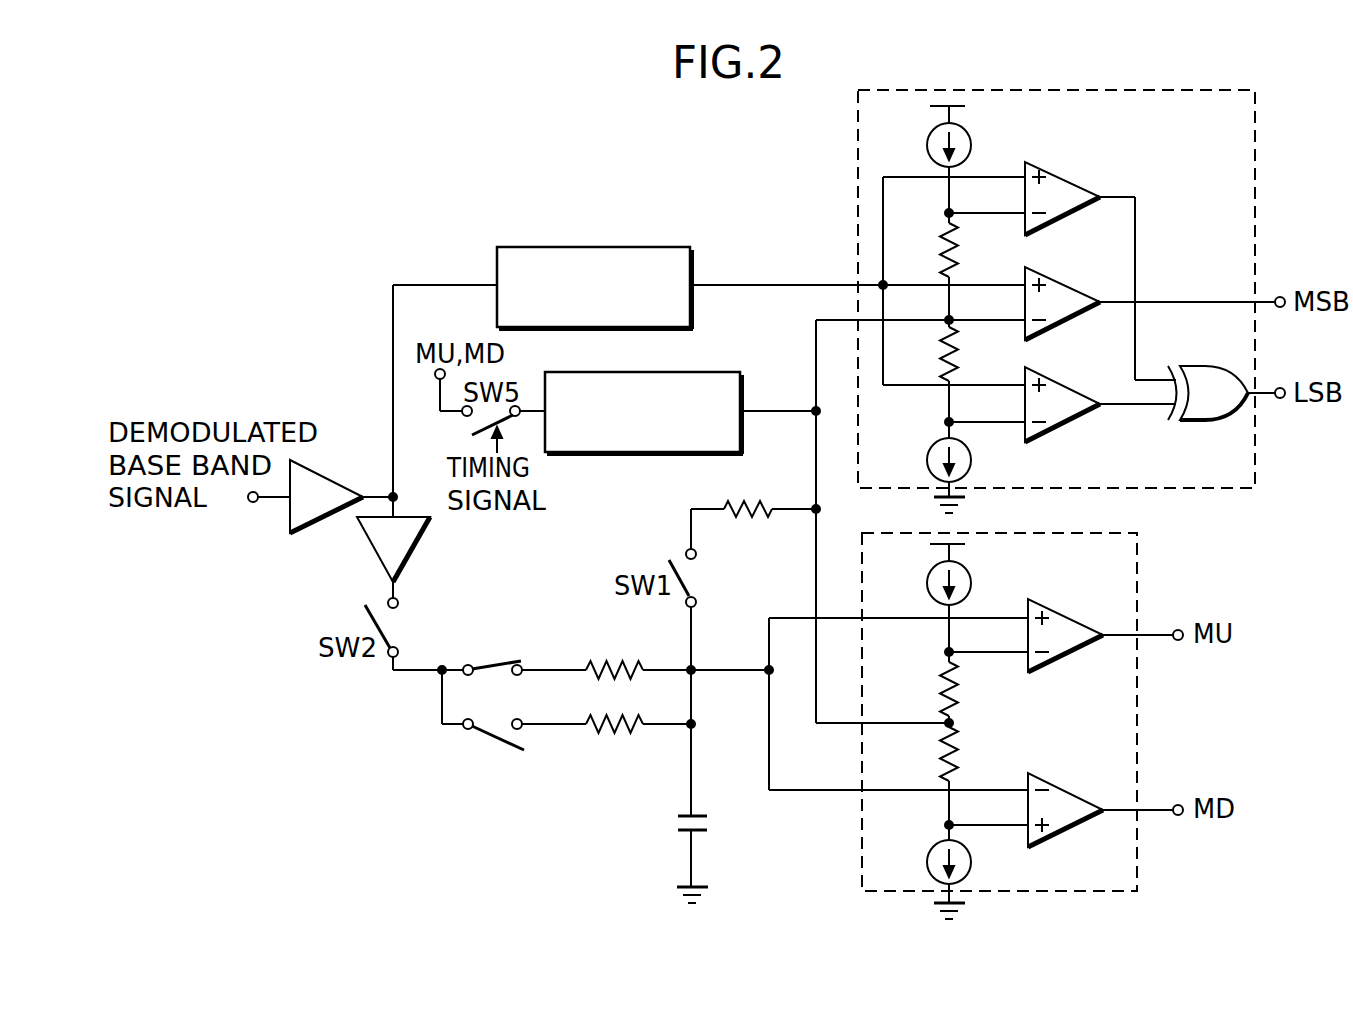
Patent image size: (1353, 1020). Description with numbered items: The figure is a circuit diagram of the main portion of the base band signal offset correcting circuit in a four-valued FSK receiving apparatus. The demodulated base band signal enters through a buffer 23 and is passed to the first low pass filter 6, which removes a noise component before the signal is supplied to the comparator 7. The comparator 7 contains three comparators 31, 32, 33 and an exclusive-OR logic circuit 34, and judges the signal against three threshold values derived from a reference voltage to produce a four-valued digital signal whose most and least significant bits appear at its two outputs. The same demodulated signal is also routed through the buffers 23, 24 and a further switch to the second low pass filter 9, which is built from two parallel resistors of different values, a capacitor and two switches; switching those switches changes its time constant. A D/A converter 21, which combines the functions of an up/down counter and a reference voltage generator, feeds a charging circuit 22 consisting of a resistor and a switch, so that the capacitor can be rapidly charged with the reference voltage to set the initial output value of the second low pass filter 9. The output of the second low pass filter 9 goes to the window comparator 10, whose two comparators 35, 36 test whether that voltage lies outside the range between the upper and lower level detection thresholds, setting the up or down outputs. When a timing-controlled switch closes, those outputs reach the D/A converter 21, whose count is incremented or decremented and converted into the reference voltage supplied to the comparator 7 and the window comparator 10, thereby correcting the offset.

The first low pass filter 6 is at (637, 247).
The comparator 7 is at (858, 118).
The second low pass filter 9 is at (592, 638).
The window comparator 10 is at (1137, 560).
The D/A converter 21 is at (724, 372).
The charging circuit 22 is at (715, 496).
The buffer 23 is at (344, 482).
The buffer 24 is at (410, 556).
The comparator 31 is at (1078, 179).
The comparator 32 is at (1078, 283).
The comparator 33 is at (1078, 384).
The logic circuit (EX-OR circuit) 34 is at (1222, 363).
The comparator 35 is at (1082, 619).
The comparator 36 is at (1082, 791).